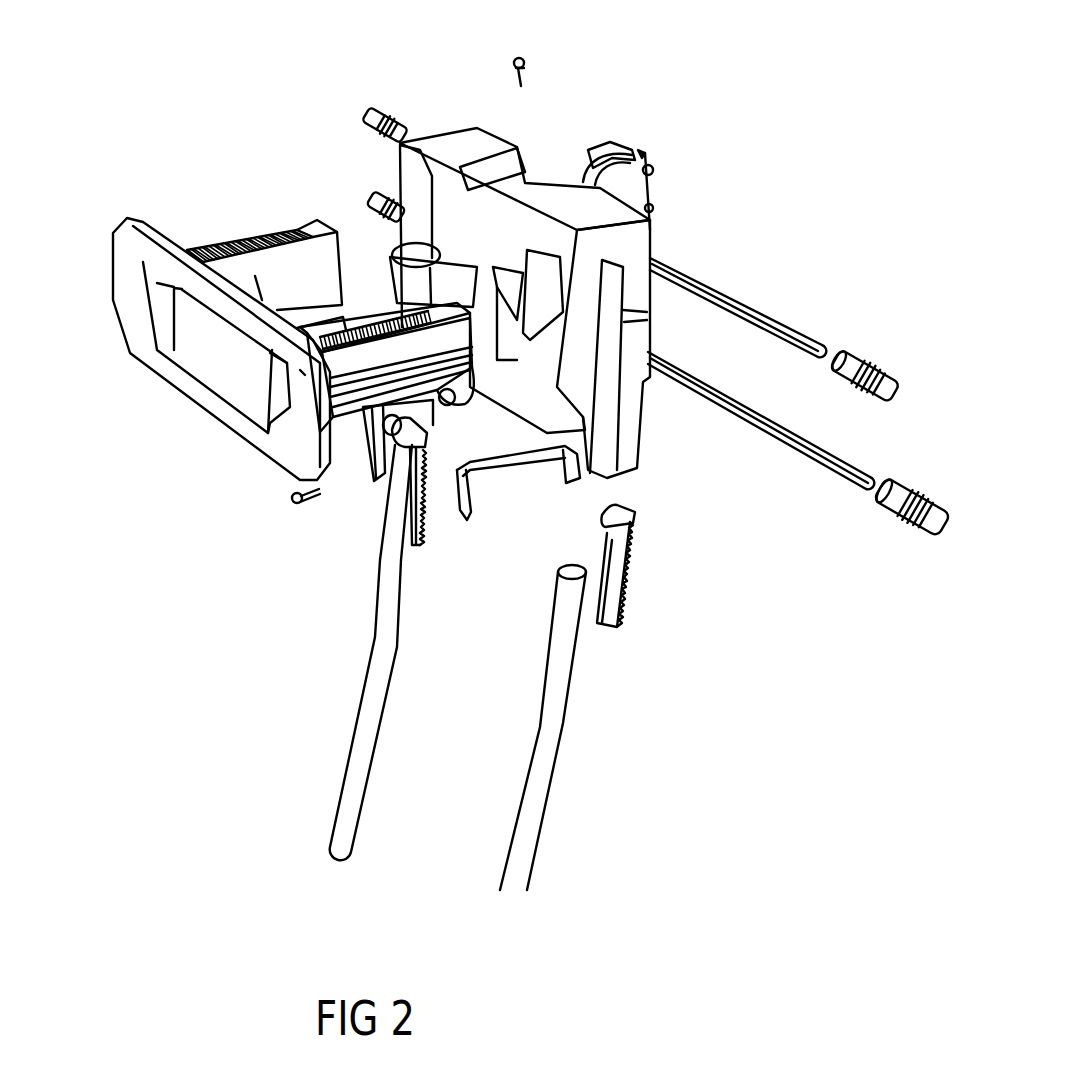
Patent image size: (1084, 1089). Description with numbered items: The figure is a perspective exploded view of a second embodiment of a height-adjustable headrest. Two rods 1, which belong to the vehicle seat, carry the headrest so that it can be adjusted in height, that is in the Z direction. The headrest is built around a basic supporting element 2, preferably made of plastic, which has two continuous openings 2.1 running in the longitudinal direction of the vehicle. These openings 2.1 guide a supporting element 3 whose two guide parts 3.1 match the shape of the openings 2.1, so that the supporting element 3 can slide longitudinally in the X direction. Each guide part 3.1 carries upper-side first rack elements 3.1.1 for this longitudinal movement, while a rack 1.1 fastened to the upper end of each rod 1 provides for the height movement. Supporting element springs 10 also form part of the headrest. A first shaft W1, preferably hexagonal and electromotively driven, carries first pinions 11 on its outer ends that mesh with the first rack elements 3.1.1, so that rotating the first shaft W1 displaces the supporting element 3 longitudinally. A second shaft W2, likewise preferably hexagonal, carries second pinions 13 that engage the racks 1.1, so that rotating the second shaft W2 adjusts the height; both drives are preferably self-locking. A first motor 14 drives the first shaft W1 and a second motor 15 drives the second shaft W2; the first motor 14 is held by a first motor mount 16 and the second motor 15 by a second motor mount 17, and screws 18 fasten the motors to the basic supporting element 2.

The rods 1 is at (362, 741).
The rack 1.1 is at (413, 533).
The basic supporting element 2 is at (490, 137).
The openings 2.1 is at (557, 277).
The supporting element 3 is at (150, 245).
The guide parts 3.1 is at (257, 277).
The first rack elements 3.1.1 is at (242, 243).
The supporting element springs 10 is at (578, 481).
The first pinions 11 is at (378, 118).
The second pinions 13 is at (377, 200).
The first motor 14 is at (648, 158).
The second motor 15 is at (458, 270).
The first motor mount 16 is at (600, 142).
The second motor mount 17 is at (373, 476).
The screws 18 is at (524, 70).
The first shaft W1 is at (763, 320).
The second shaft W2 is at (787, 447).